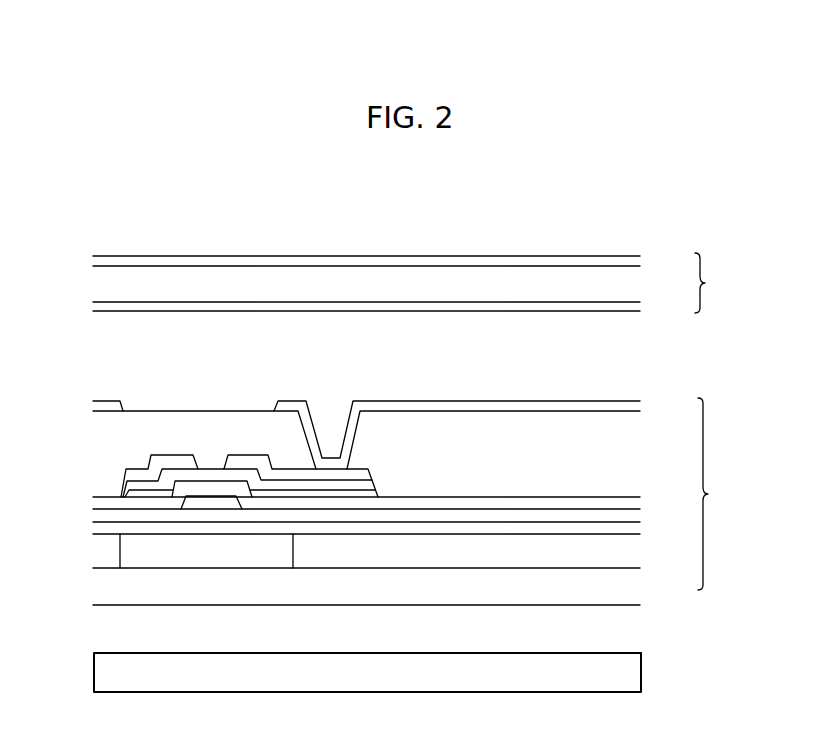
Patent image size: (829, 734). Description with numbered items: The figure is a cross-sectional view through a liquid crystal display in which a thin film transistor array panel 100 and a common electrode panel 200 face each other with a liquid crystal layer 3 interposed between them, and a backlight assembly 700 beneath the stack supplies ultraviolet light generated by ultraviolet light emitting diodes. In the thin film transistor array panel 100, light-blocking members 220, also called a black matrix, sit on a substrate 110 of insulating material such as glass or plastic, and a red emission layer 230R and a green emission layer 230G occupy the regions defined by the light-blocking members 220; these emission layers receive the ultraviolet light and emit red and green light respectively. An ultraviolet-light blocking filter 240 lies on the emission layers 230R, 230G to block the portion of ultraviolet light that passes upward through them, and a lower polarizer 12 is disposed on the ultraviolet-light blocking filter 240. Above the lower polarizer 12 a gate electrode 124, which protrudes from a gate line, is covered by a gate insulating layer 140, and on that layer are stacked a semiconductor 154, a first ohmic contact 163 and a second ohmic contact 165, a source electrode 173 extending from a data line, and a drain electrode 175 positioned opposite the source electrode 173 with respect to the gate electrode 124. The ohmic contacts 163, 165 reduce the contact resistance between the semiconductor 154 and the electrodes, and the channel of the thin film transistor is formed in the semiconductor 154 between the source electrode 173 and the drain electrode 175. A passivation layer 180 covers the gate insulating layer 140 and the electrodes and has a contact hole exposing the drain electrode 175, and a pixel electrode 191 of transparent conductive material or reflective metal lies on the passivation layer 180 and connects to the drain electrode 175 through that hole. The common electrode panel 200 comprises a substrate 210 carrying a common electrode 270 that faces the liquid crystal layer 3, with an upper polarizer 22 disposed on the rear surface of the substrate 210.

The upper polarizer 22 is at (642, 262).
The substrate 210 is at (633, 283).
The common electrode 270 is at (642, 308).
The common electrode panel 200 is at (717, 283).
The liquid crystal layer 3 is at (633, 358).
The pixel electrode 191 is at (642, 405).
The passivation layer 180 is at (633, 453).
The source electrode 173 is at (137, 475).
The first ohmic contact 163 is at (157, 483).
The second ohmic contact 165 is at (317, 483).
The drain electrode 175 is at (360, 473).
The semiconductor 154 is at (273, 490).
The gate insulating layer 140 is at (641, 498).
The gate electrode 124 is at (210, 503).
The lower polarizer 12 is at (633, 517).
The ultraviolet-light blocking filter 240 is at (633, 532).
The red emission layer 230R is at (116, 561).
The light-blocking member 220 is at (198, 561).
The green emission layer 230G is at (489, 561).
The substrate 110 is at (633, 587).
The thin film transistor array panel 100 is at (720, 494).
The backlight assembly 700 is at (642, 673).